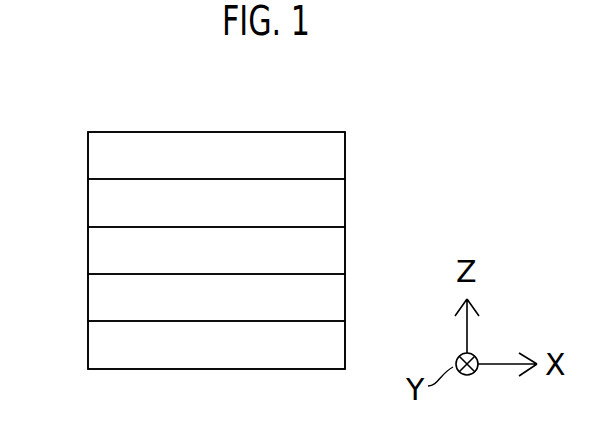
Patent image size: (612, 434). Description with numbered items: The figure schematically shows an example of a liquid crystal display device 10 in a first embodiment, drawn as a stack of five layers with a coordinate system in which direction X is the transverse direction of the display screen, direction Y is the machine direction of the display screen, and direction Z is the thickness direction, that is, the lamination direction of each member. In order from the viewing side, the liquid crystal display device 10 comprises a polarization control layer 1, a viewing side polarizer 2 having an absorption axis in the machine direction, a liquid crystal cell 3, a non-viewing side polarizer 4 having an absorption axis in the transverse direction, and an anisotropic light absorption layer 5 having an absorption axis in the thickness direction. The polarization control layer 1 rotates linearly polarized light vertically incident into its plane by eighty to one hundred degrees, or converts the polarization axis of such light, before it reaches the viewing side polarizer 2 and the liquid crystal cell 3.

The liquid crystal display device 10 is at (289, 105).
The polarization control layer 1 is at (108, 158).
The viewing side polarizer 2 is at (108, 206).
The liquid crystal cell 3 is at (108, 253).
The non-viewing side polarizer 4 is at (108, 300).
The anisotropic light absorption layer 5 is at (108, 348).